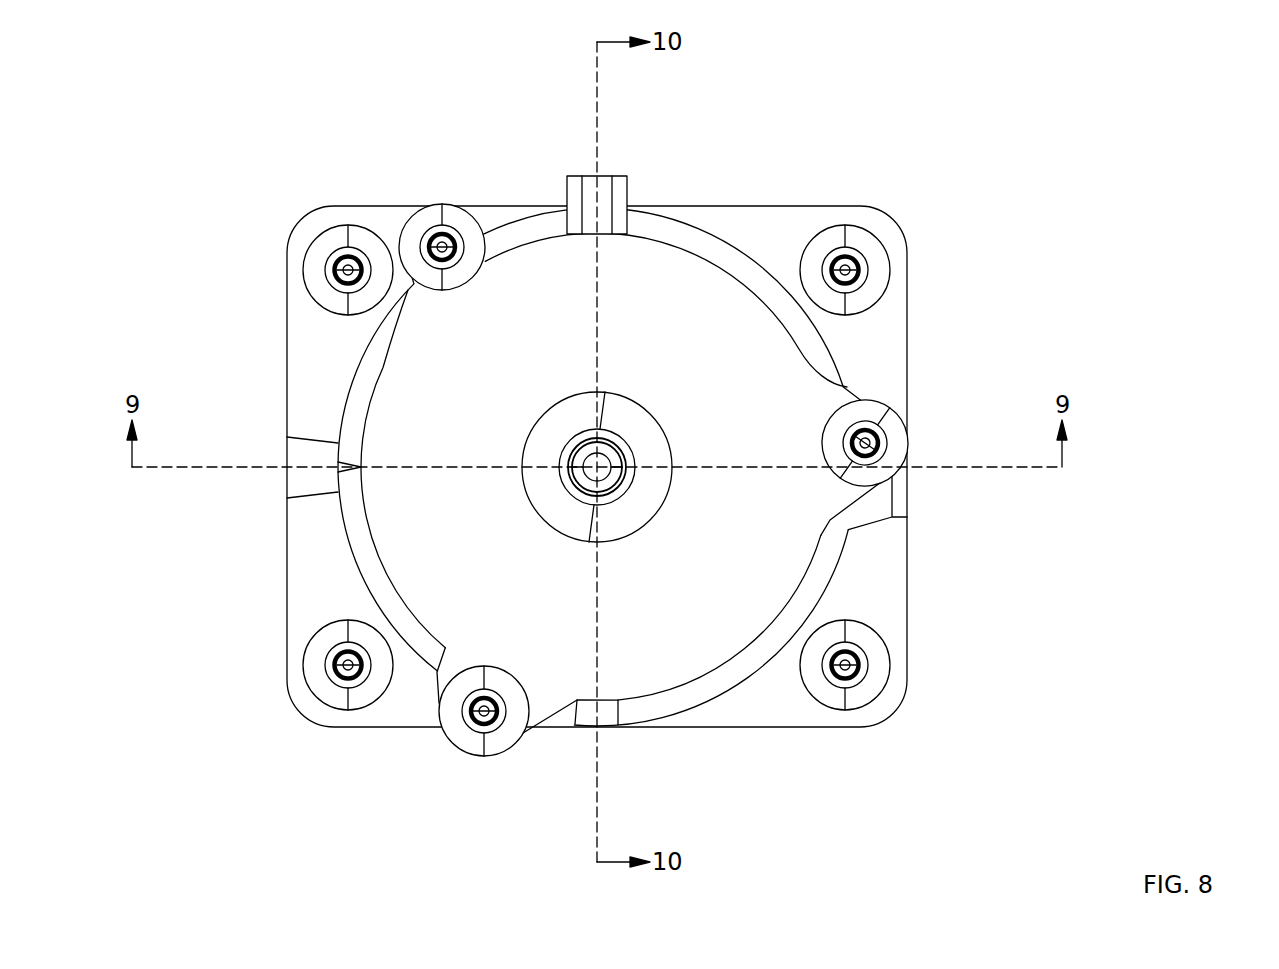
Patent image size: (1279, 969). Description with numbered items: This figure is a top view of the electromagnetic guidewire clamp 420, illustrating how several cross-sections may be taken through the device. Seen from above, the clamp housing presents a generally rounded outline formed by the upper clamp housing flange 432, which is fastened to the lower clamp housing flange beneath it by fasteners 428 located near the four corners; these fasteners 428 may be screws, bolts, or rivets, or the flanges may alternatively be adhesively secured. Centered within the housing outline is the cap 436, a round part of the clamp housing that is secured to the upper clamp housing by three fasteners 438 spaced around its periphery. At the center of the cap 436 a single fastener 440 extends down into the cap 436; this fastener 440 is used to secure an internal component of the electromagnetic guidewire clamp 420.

The electromagnetic guidewire clamp 420 is at (976, 91).
The fasteners 428 is at (318, 255).
The upper clamp housing flange 432 is at (345, 594).
The cap 436 is at (705, 332).
The fasteners 438 is at (432, 212).
The fastener 440 is at (637, 422).